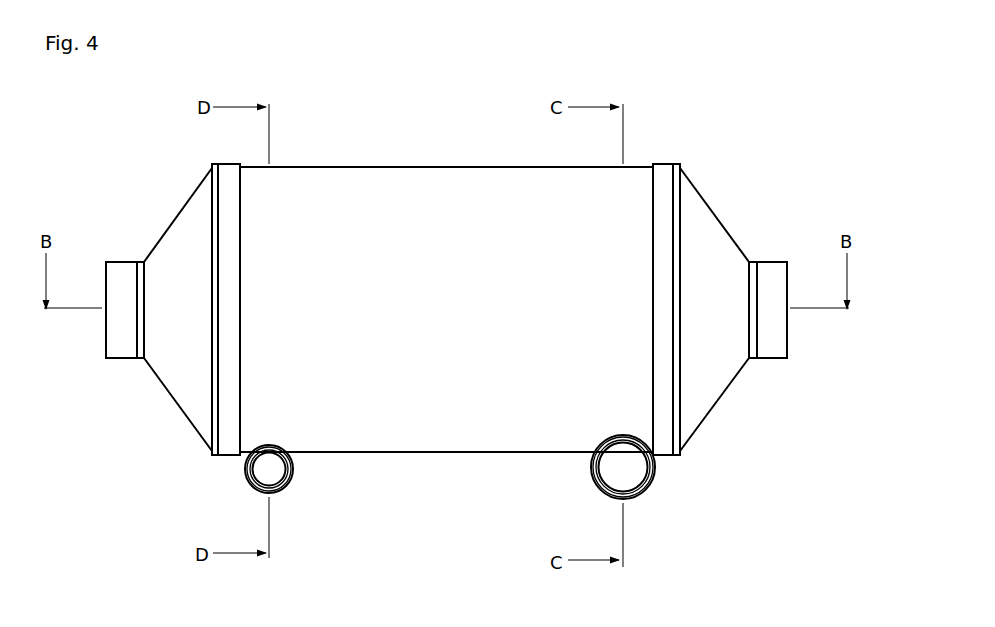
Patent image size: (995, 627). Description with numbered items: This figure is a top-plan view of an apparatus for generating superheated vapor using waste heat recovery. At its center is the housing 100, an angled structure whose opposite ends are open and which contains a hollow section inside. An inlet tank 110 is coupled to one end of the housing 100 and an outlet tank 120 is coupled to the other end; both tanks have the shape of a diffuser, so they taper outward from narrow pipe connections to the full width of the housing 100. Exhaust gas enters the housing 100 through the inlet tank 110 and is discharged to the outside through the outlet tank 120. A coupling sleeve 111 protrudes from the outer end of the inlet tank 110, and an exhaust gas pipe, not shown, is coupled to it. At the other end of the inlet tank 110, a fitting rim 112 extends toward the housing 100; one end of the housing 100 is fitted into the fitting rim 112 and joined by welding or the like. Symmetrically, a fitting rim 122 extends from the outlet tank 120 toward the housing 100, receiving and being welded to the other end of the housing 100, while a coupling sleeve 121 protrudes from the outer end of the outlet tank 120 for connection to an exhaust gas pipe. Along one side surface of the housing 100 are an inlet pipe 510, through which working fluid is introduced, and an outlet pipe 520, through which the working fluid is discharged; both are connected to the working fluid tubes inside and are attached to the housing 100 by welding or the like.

The housing 100 is at (432, 164).
The inlet tank 110 is at (172, 328).
The coupling sleeve 111 is at (124, 341).
The fitting rim 112 is at (231, 198).
The outlet tank 120 is at (760, 312).
The coupling sleeve 121 is at (780, 340).
The fitting rim 122 is at (661, 417).
The inlet pipe 510 is at (657, 475).
The outlet pipe 520 is at (293, 468).